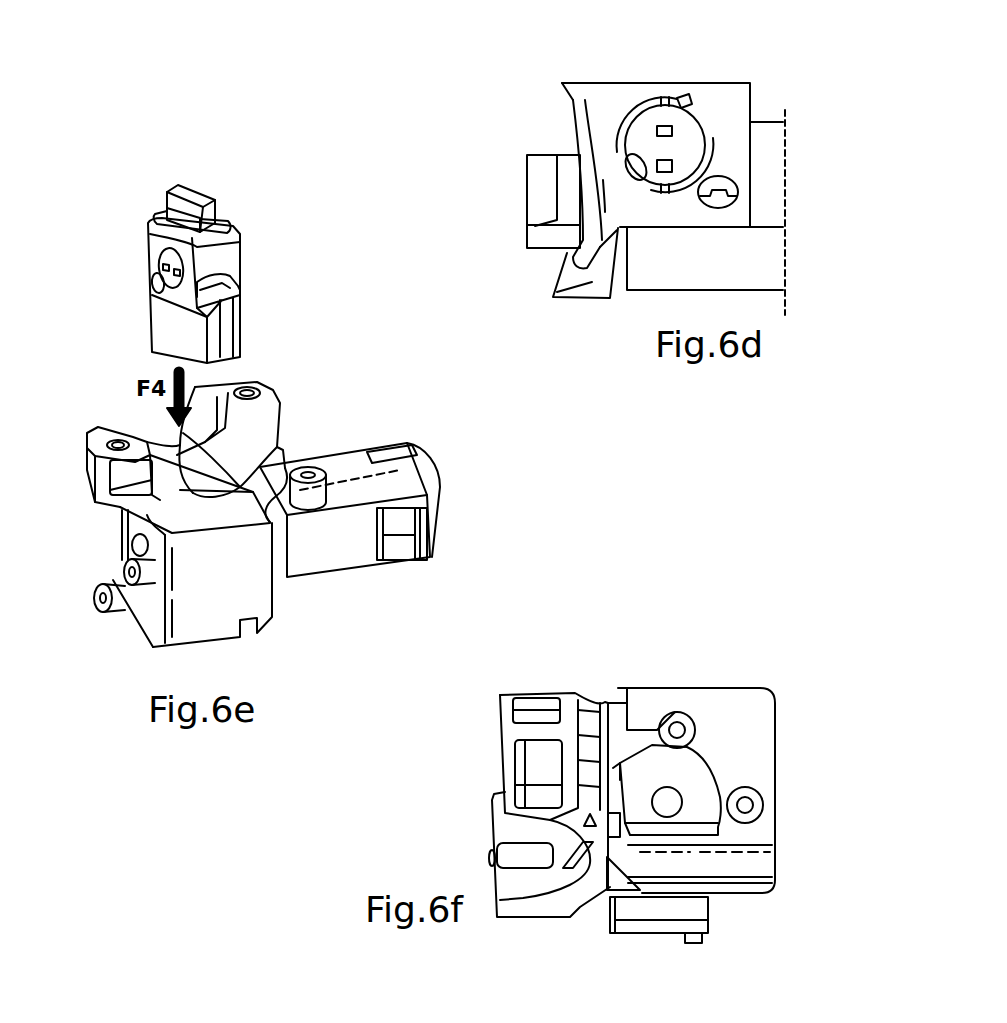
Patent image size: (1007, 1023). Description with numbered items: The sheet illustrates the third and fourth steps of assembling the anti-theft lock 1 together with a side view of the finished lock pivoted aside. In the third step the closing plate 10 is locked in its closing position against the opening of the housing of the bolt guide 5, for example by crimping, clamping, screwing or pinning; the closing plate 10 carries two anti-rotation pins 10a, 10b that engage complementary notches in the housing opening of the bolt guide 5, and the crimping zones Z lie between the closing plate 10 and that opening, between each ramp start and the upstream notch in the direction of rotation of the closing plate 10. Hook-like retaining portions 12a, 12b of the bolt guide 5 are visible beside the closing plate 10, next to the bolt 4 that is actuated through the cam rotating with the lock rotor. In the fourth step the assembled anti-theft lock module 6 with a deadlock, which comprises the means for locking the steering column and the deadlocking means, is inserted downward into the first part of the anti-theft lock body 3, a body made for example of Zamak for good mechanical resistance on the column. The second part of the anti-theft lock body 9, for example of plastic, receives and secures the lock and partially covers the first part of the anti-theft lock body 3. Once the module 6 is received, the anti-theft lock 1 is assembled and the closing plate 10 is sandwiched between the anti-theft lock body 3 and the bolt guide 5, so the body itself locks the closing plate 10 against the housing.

In FIG. 6F, the anti-theft lock 1 is at (523, 680).
In FIG. 6E, the first part of the anti-theft lock body 3 is at (87, 476).
In FIG. 6F, the first part of the anti-theft lock body 3 is at (513, 912).
In FIG. 6D, the bolt 4 is at (540, 195).
In FIG. 6E, the bolt 4 is at (196, 193).
In FIG. 6F, the bolt 4 is at (560, 831).
In FIG. 6D, the bolt guide 5 is at (593, 92).
In FIG. 6E, the bolt guide 5 is at (228, 340).
In FIG. 6D, the anti-theft lock module with a deadlock 6 is at (540, 100).
In FIG. 6E, the anti-theft lock module with a deadlock 6 is at (114, 265).
In FIG. 6E, the second part of the anti-theft lock body 9 is at (395, 450).
In FIG. 6F, the second part of the anti-theft lock body 9 is at (732, 883).
In FIG. 6D, the closing plate 10 is at (644, 115).
In FIG. 6E, the closing plate 10 is at (158, 278).
In FIG. 6D, the anti-rotation pin 10a is at (663, 101).
In FIG. 6D, the anti-rotation pin 10b is at (663, 187).
In FIG. 6D, the first hook / retaining arm 12a is at (617, 127).
In FIG. 6D, the second retaining arm 12b is at (713, 147).
In FIG. 6D, the crimping zones Z is at (707, 123).